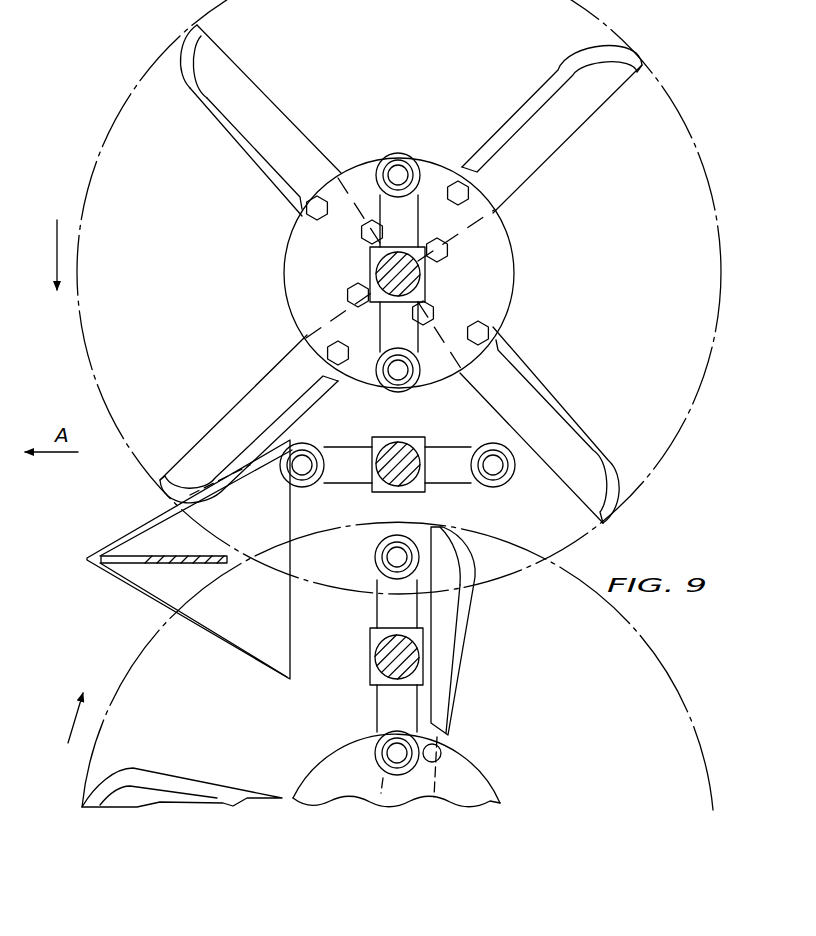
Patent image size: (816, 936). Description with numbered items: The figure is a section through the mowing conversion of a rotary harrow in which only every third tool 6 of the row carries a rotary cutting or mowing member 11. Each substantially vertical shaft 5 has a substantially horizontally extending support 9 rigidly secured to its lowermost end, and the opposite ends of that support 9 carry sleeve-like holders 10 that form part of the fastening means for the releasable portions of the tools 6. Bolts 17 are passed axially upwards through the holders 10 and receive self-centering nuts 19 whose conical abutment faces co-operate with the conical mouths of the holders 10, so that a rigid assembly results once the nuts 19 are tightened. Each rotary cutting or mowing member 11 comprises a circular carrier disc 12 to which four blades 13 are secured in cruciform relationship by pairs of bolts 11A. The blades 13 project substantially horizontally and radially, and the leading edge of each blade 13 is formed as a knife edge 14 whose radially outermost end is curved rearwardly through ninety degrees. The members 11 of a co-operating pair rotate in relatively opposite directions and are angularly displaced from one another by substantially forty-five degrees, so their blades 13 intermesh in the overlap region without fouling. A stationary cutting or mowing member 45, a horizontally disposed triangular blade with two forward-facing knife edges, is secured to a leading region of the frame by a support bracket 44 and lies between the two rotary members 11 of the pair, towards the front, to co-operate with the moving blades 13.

The shaft 5 is at (383, 266).
The tool 6 is at (376, 319).
The support 9 is at (400, 224).
The holder 10 is at (398, 393).
The cutting or mowing member 11 is at (272, 92).
The bolt 11A is at (478, 324).
The carrier disc 12 is at (293, 243).
The blade 13 is at (298, 138).
The knife edge 14 is at (234, 134).
The bolt 17 is at (400, 170).
The nut 19 is at (412, 166).
The support bracket 44 is at (152, 571).
The stationary cutting or mowing member 45 is at (142, 521).